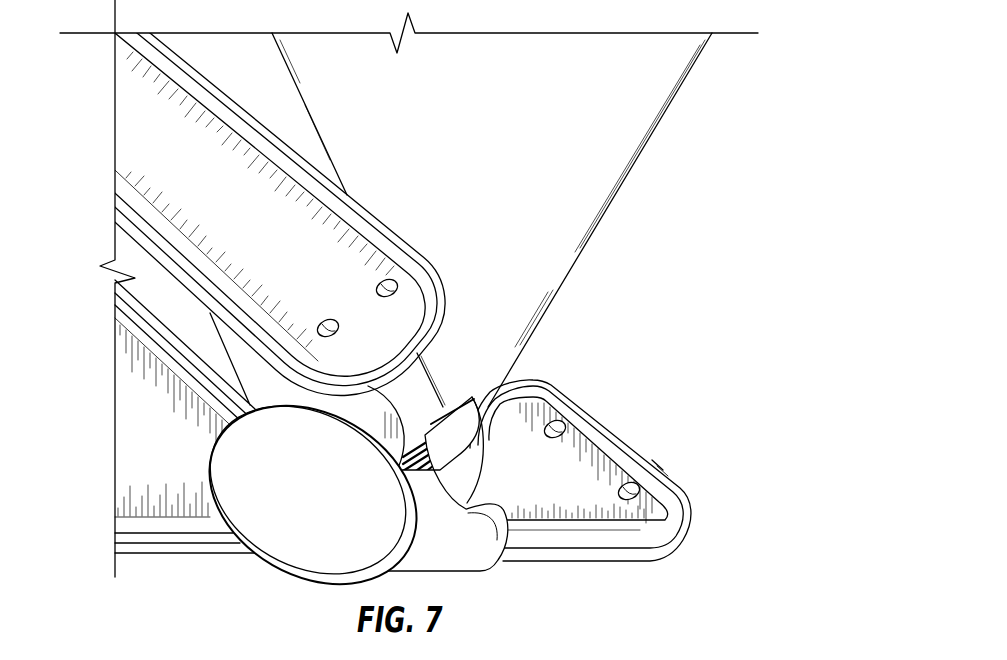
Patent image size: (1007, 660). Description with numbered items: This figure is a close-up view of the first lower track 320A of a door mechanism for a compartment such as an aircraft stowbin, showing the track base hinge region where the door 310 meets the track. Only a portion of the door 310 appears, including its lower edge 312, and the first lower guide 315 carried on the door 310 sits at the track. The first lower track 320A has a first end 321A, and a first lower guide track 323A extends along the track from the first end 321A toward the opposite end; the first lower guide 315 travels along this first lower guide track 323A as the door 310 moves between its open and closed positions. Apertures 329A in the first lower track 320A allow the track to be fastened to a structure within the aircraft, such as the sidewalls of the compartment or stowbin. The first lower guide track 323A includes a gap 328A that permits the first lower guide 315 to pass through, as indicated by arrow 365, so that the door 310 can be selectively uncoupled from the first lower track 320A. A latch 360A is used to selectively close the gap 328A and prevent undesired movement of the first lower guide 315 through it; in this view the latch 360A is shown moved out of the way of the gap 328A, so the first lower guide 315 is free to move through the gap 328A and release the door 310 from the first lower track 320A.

The door 310 is at (504, 120).
The lower edge 312 is at (667, 87).
The first lower guide 315 is at (330, 517).
The first lower track 320A is at (218, 182).
The first end 321A is at (646, 452).
The first lower guide track 323A is at (170, 307).
The gap 328A is at (454, 386).
The apertures 329A is at (389, 280).
The latch 360A is at (475, 557).
The arrow 365 is at (403, 400).